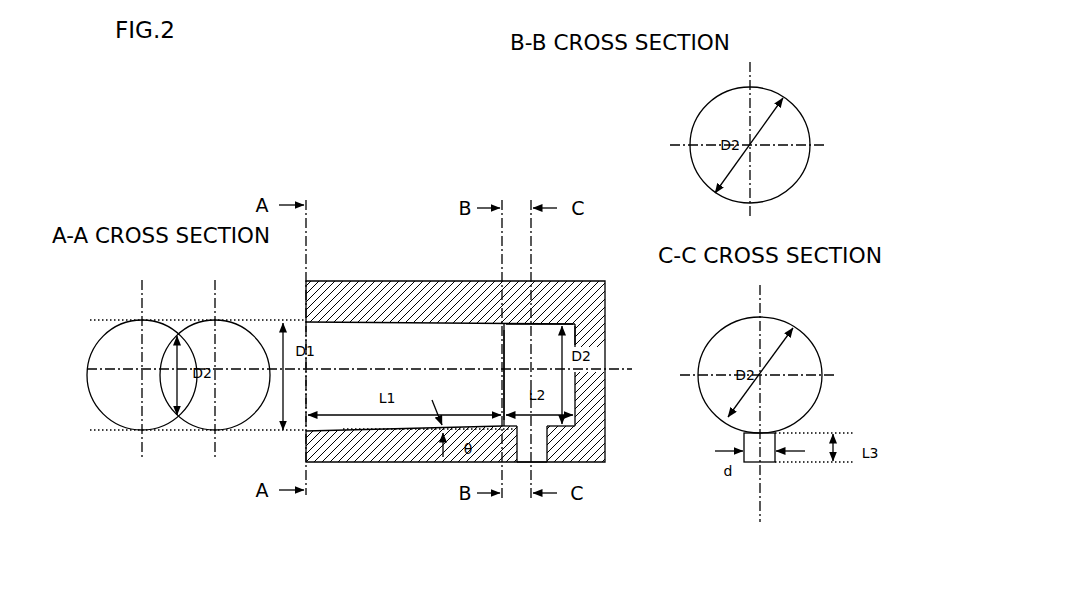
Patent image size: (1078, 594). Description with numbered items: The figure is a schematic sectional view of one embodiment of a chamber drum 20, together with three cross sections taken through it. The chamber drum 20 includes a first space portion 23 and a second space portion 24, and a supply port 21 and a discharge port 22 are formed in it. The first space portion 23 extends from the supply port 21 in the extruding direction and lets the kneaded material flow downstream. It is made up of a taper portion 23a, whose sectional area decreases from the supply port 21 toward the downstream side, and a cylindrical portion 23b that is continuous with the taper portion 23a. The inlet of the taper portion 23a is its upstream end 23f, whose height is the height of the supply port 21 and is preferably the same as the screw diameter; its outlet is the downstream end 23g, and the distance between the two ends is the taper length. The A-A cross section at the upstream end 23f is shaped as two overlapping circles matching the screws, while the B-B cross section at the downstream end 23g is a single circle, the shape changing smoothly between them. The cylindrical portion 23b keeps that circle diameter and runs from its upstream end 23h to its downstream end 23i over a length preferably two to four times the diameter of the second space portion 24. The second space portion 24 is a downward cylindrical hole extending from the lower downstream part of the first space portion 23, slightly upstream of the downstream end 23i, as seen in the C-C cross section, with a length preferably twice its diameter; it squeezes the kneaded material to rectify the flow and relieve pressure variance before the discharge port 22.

The chamber drum 20 is at (602, 262).
The supply port 21 is at (303, 327).
The discharge port 22 is at (526, 463).
The first space portion 23 is at (501, 337).
The taper portion 23a is at (370, 337).
The cylindrical portion 23b is at (573, 390).
The upstream end 23f is at (306, 370).
The downstream end 23g is at (503, 346).
The upstream end 23h is at (528, 328).
The downstream end 23i is at (575, 345).
The second space portion 24 is at (546, 445).